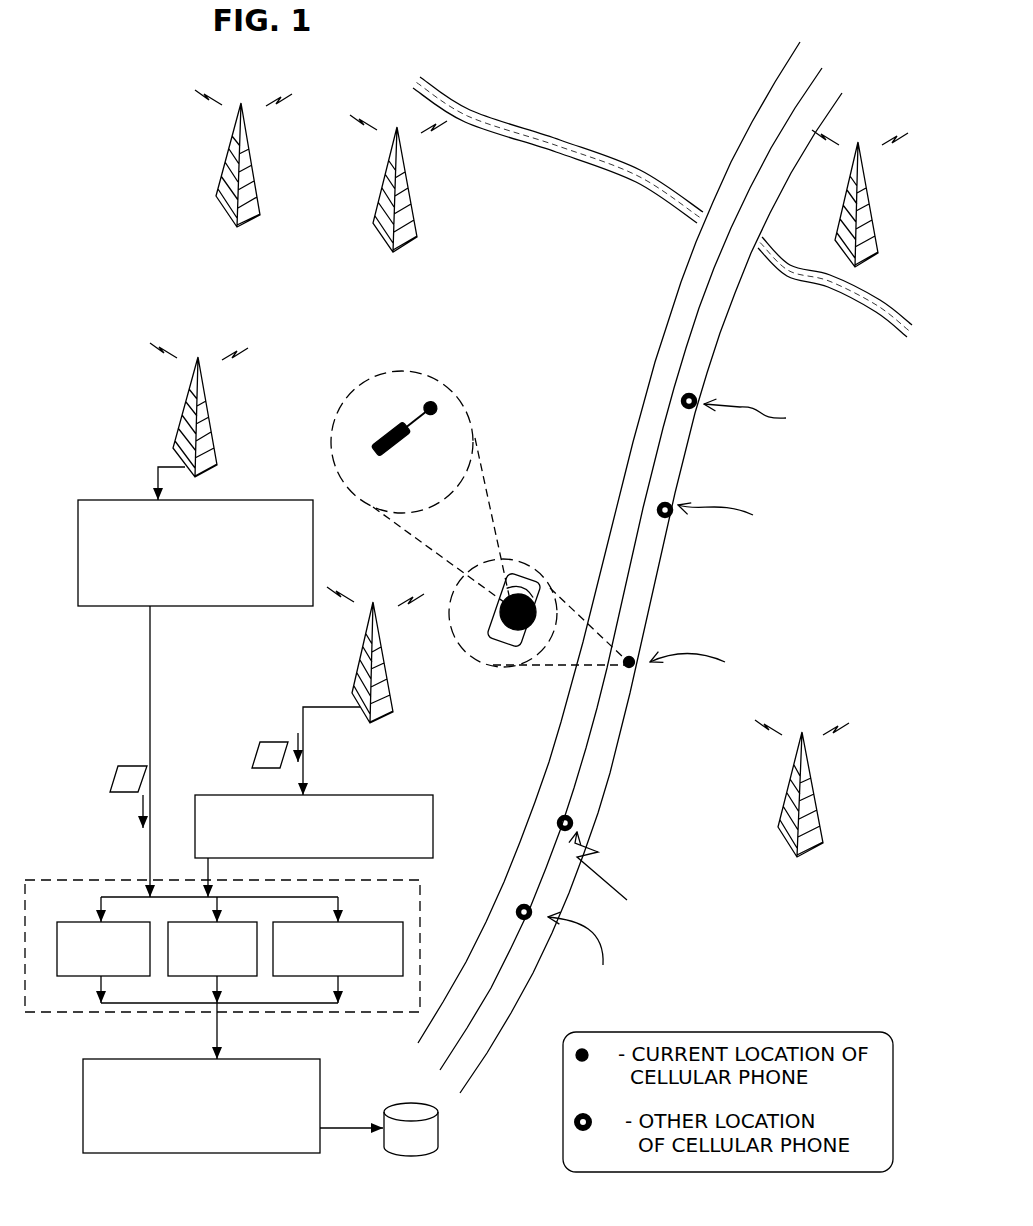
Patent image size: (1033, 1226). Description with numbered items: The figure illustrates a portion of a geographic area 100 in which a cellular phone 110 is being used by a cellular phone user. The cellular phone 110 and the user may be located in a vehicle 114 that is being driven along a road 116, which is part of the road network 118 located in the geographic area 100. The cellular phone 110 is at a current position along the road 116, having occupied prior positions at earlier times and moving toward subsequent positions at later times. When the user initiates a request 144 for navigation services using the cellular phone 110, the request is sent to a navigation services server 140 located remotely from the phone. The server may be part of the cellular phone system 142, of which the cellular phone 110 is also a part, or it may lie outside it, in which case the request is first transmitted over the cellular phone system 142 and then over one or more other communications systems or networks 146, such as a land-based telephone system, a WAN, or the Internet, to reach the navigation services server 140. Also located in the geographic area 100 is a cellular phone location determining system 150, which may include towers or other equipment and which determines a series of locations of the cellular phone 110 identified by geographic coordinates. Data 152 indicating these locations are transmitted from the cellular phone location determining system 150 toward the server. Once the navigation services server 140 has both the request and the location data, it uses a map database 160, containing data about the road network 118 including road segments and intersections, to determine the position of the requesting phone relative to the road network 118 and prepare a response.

The geographic area 100 is at (656, 80).
The cellular phone 110 is at (408, 408).
The vehicle 114 is at (495, 648).
The road 116 is at (690, 457).
The road network 118 is at (647, 203).
The navigation services server 140 is at (233, 1106).
The cellular phone system 142 is at (358, 205).
The request for navigation services 144 is at (251, 702).
The communications systems or networks 146 is at (222, 969).
The cellular phone location determining system 150 is at (202, 182).
The data indicating the location of the cellular phone 152 is at (105, 744).
The map database 160 is at (452, 1111).